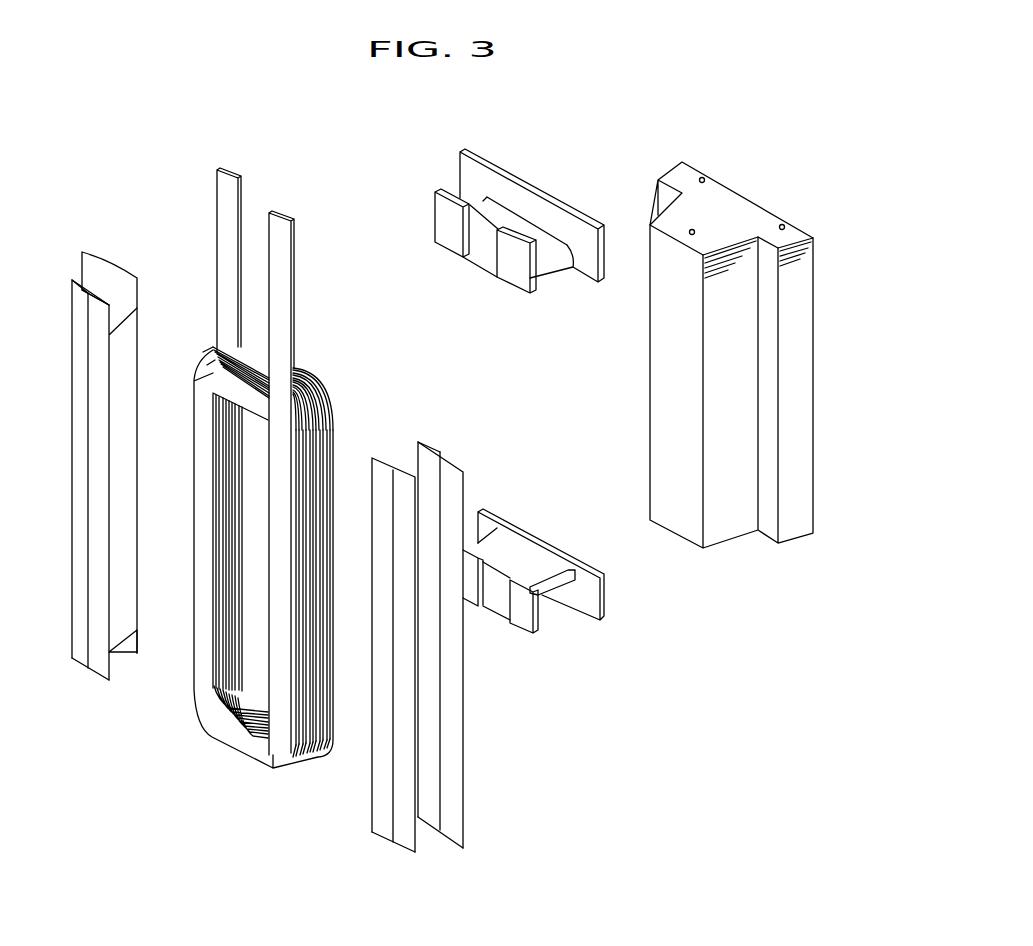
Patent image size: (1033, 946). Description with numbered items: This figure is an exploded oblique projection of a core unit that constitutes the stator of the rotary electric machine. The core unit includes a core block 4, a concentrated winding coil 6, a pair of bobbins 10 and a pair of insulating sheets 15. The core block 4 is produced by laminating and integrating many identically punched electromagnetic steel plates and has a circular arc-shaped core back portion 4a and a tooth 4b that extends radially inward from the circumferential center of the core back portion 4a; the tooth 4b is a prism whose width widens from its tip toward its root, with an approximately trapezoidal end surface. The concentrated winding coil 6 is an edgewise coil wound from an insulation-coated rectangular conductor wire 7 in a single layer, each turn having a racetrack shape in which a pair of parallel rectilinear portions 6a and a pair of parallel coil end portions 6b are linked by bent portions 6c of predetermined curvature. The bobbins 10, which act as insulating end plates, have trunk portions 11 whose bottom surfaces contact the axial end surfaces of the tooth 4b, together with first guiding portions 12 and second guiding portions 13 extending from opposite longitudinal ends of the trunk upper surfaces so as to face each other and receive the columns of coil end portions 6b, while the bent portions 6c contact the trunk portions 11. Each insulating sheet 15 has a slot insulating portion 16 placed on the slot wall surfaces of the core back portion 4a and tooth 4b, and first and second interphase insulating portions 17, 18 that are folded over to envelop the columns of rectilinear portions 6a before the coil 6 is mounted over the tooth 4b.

The core block 4 is at (737, 341).
The core back portion 4a is at (715, 180).
The tooth 4b is at (705, 220).
The concentrated winding coil 6 is at (273, 564).
The rectilinear portions 6a is at (287, 523).
The coil end portions 6b is at (252, 393).
The bent portions 6c is at (213, 380).
The rectangular conductor wire 7 is at (295, 270).
The bobbins 10 is at (514, 410).
The trunk portions 11 is at (517, 223).
The first guiding portions 12 is at (460, 207).
The second guiding portions 13 is at (572, 210).
The insulating sheets 15 is at (299, 556).
The slot insulating portion 16 is at (125, 407).
The first interphase insulating portion 17 is at (78, 658).
The second interphase insulating portion 18 is at (98, 268).